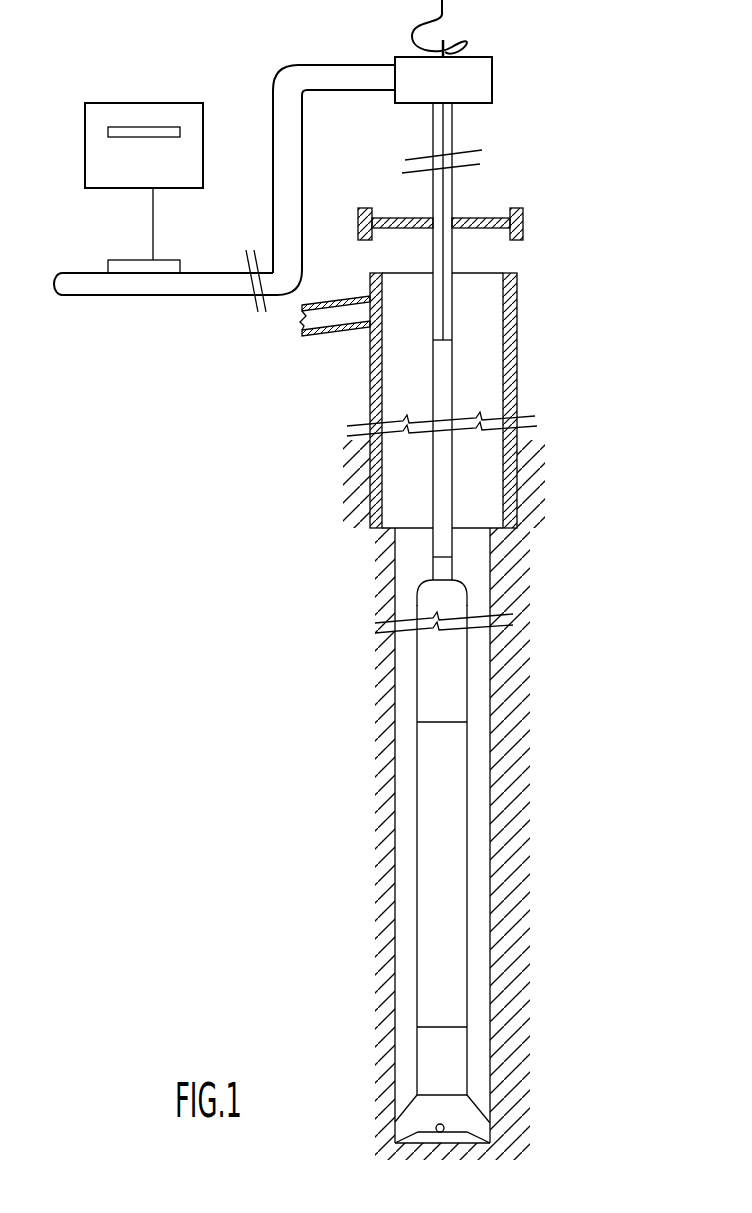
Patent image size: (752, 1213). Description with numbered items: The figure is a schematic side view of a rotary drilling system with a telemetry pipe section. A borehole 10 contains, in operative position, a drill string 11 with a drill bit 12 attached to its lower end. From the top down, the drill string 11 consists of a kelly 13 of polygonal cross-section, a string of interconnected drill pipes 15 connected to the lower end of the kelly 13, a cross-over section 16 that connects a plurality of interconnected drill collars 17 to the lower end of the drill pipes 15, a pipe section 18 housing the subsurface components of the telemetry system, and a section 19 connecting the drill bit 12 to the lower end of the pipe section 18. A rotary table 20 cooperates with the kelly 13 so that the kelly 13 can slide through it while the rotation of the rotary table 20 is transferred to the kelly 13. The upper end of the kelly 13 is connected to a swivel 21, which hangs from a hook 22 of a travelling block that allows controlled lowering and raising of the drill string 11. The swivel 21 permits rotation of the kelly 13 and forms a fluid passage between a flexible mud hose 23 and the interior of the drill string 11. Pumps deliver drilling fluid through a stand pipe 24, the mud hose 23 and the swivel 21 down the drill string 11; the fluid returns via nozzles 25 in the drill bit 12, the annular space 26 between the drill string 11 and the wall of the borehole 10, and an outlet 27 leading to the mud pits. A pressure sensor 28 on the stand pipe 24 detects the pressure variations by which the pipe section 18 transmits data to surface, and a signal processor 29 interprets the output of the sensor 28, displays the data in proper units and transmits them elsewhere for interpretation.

The borehole 10 is at (393, 820).
The drill string 11 is at (410, 689).
The drill bit 12 is at (413, 1113).
The kelly 13 is at (450, 250).
The string of interconnected drill pipes 15 is at (447, 487).
The cross-over section 16 is at (409, 599).
The drill collars 17 is at (455, 673).
The pipe section 18 is at (445, 873).
The section 19 is at (452, 1060).
The rotary table 20 is at (526, 221).
The swivel 21 is at (487, 78).
The hook 22 is at (448, 18).
The flexible mud hose 23 is at (288, 240).
The stand pipe 24 is at (205, 283).
The nozzles 25 is at (445, 1130).
The annular space 26 is at (482, 783).
The outlet 27 is at (338, 316).
The pressure sensor 28 is at (148, 280).
The signal processor 29 is at (190, 163).